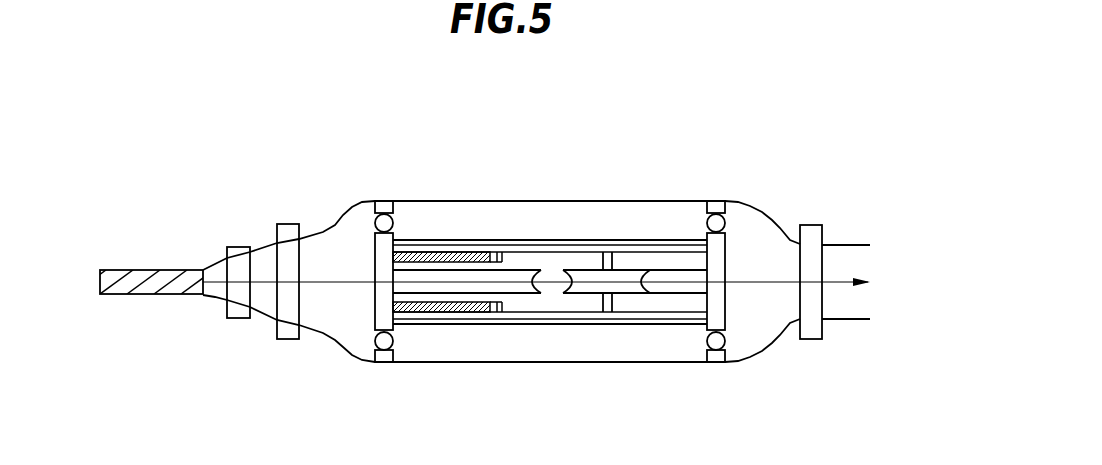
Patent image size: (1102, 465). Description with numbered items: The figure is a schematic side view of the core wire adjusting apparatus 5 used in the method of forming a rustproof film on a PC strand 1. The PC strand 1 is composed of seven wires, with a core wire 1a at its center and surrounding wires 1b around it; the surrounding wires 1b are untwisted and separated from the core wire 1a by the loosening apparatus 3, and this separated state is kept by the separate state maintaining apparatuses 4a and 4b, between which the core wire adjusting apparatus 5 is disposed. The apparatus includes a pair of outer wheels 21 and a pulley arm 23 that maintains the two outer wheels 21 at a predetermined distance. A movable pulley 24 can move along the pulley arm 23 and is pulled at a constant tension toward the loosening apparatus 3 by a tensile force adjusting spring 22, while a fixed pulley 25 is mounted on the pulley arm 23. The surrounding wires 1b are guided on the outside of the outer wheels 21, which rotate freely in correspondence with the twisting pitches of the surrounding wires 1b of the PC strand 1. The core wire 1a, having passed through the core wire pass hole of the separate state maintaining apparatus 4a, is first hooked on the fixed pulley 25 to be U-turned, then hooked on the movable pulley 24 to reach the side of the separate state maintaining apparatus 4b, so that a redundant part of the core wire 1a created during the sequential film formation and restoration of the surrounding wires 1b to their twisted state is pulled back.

The PC strand 1 is at (143, 335).
The core wire 1a is at (289, 300).
The surrounding wires 1b is at (289, 347).
The loosening apparatus 3 is at (221, 323).
The separate state maintaining apparatus 4a is at (266, 312).
The separate state maintaining apparatus 4b is at (832, 312).
The core wire adjusting apparatus 5 is at (587, 242).
The outer wheels 21 is at (546, 300).
The tensile force adjusting spring 22 is at (445, 326).
The pulley arm 23 is at (550, 320).
The movable pulley 24 is at (467, 335).
The fixed pulley 25 is at (635, 326).